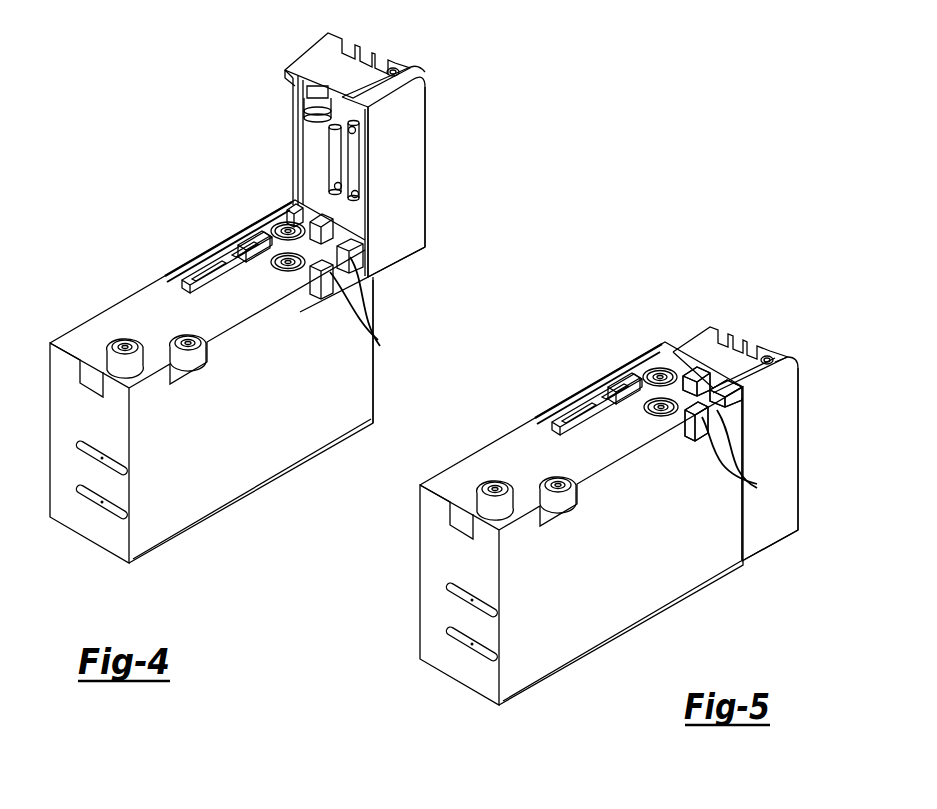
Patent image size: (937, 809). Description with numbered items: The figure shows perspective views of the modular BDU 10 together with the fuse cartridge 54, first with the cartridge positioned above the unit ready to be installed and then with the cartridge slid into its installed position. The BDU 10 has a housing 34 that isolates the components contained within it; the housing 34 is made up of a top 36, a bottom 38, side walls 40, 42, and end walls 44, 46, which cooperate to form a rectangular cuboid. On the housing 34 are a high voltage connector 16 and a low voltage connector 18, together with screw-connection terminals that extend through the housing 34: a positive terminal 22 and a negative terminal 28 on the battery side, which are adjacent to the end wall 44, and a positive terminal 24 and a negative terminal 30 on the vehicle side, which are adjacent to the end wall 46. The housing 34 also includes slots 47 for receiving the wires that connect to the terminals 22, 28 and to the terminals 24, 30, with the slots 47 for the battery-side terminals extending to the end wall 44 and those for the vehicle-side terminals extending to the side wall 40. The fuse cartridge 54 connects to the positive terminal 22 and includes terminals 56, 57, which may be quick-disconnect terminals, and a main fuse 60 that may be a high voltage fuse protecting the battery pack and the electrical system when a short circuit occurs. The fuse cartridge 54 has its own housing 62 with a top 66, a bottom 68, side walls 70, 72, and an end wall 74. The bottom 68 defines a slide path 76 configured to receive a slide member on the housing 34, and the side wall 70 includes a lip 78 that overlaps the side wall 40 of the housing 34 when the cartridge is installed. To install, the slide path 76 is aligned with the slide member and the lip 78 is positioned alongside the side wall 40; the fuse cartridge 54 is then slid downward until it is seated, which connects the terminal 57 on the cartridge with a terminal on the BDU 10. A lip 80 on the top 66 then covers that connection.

In FIG. 4, the modular BDU 10 is at (218, 357).
In FIG. 5, the modular BDU 10 is at (586, 506).
In FIG. 4, the high voltage connector 16 is at (212, 264).
In FIG. 5, the high voltage connector 16 is at (597, 393).
In FIG. 4, the low voltage connector 18 is at (250, 243).
In FIG. 5, the low voltage connector 18 is at (618, 368).
In FIG. 4, the positive terminal 22 is at (285, 222).
In FIG. 5, the positive terminal 22 is at (657, 351).
In FIG. 4, the positive terminal 24 is at (125, 340).
In FIG. 5, the positive terminal 24 is at (490, 469).
In FIG. 4, the negative terminal 28 is at (272, 266).
In FIG. 5, the negative terminal 28 is at (638, 422).
In FIG. 4, the negative terminal 30 is at (184, 336).
In FIG. 5, the negative terminal 30 is at (558, 475).
In FIG. 4, the housing 34 is at (251, 406).
In FIG. 5, the housing 34 is at (621, 546).
In FIG. 4, the top 36 is at (150, 302).
In FIG. 5, the top 36 is at (581, 413).
In FIG. 4, the bottom 38 is at (325, 452).
In FIG. 5, the bottom 38 is at (622, 631).
In FIG. 4, the side wall 40 is at (255, 424).
In FIG. 5, the side wall 40 is at (621, 546).
In FIG. 4, the side wall 42 is at (63, 349).
In FIG. 5, the side wall 42 is at (453, 569).
In FIG. 4, the end wall 44 is at (55, 514).
In FIG. 5, the end wall 44 is at (462, 622).
In FIG. 4, the end wall 46 is at (374, 367).
In FIG. 4, the slots 47 is at (38, 402).
In FIG. 5, the slots 47 is at (586, 496).
In FIG. 4, the fuse cartridge 54 is at (328, 166).
In FIG. 5, the fuse cartridge 54 is at (751, 438).
In FIG. 4, the terminal 56 is at (395, 66).
In FIG. 5, the terminal 56 is at (767, 354).
In FIG. 4, the terminal 57 is at (310, 97).
In FIG. 4, the main fuse 60 is at (360, 192).
In FIG. 4, the housing 62 is at (390, 201).
In FIG. 5, the housing 62 is at (785, 488).
In FIG. 4, the top 66 is at (337, 51).
In FIG. 5, the top 66 is at (708, 330).
In FIG. 4, the bottom 68 is at (407, 258).
In FIG. 5, the bottom 68 is at (781, 544).
In FIG. 4, the side wall 70 is at (385, 229).
In FIG. 5, the side wall 70 is at (760, 469).
In FIG. 4, the side wall 72 is at (292, 127).
In FIG. 4, the end wall 74 is at (425, 152).
In FIG. 5, the end wall 74 is at (798, 433).
In FIG. 4, the slide path 76 is at (318, 212).
In FIG. 4, the lip 78 is at (378, 242).
In FIG. 5, the lip 78 is at (744, 528).
In FIG. 4, the lip 80 is at (303, 76).
In FIG. 5, the lip 80 is at (687, 352).